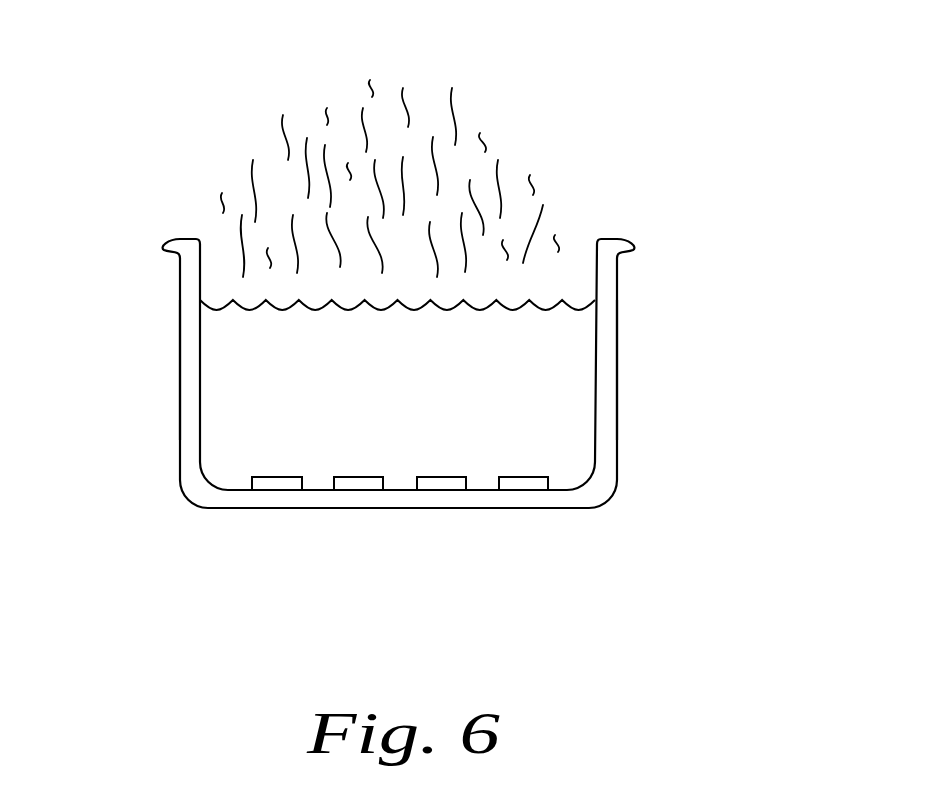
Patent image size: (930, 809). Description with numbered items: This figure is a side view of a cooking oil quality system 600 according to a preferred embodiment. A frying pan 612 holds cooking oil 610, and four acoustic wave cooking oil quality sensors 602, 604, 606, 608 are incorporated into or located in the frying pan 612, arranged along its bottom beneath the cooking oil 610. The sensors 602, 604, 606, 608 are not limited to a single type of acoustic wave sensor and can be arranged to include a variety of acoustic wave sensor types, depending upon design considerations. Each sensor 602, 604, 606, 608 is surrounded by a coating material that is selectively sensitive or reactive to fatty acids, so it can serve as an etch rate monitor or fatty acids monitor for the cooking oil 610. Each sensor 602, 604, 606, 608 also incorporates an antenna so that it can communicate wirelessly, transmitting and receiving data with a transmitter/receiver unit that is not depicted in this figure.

The cooking oil quality system 600 is at (782, 244).
The acoustic wave cooking oil quality sensor 602 is at (275, 485).
The acoustic wave cooking oil quality sensor 604 is at (358, 485).
The acoustic wave cooking oil quality sensor 606 is at (440, 487).
The acoustic wave cooking oil quality sensor 608 is at (522, 487).
The cooking oil 610 is at (570, 373).
The frying pan 612 is at (190, 368).